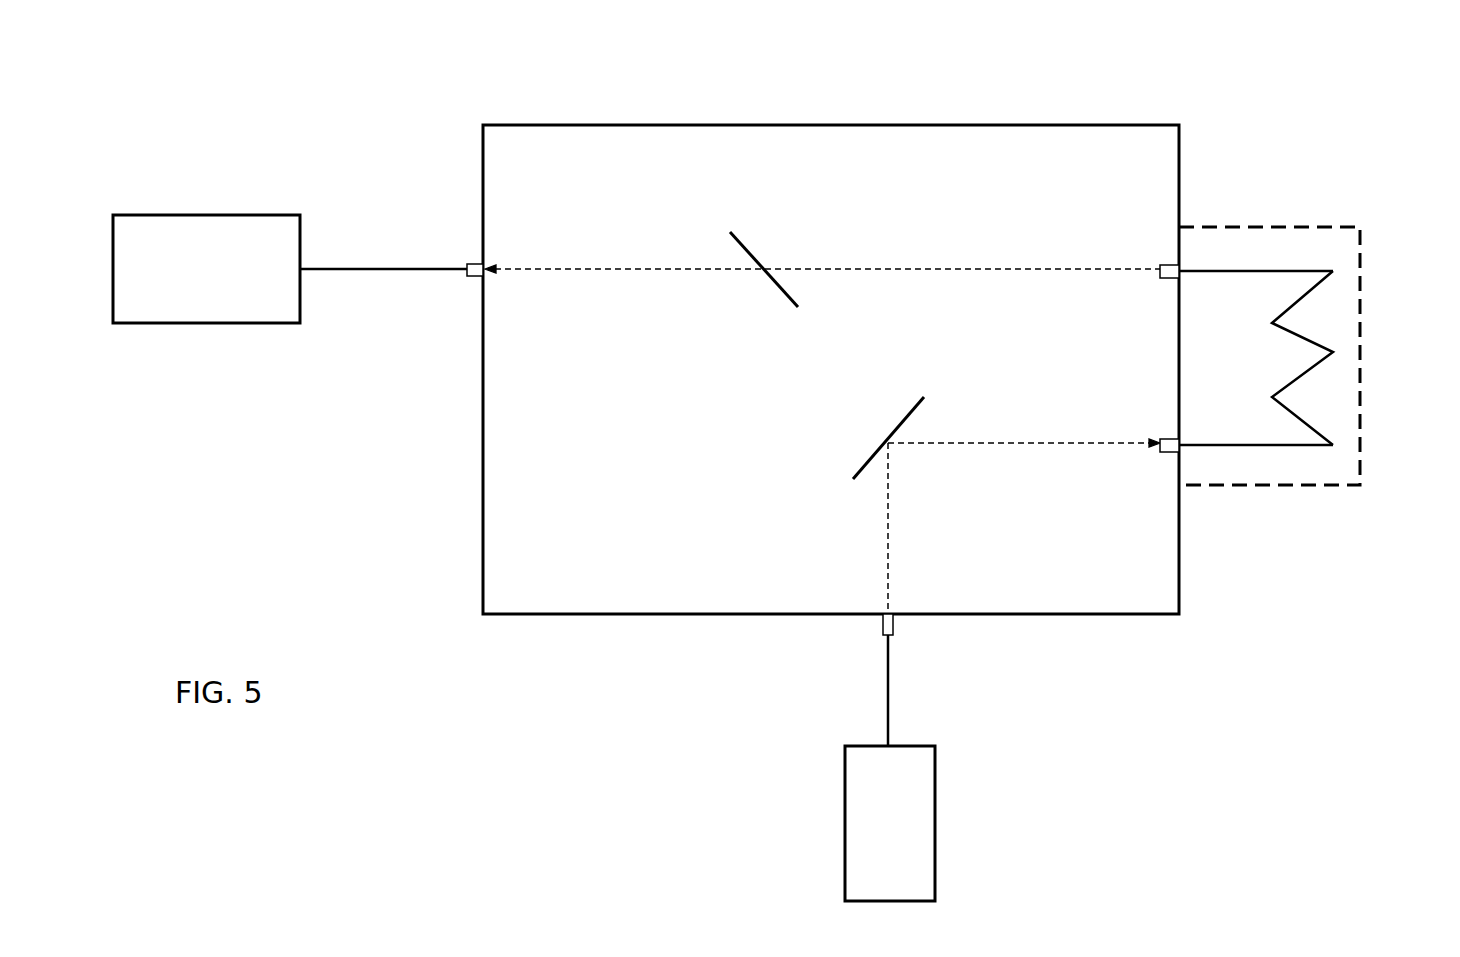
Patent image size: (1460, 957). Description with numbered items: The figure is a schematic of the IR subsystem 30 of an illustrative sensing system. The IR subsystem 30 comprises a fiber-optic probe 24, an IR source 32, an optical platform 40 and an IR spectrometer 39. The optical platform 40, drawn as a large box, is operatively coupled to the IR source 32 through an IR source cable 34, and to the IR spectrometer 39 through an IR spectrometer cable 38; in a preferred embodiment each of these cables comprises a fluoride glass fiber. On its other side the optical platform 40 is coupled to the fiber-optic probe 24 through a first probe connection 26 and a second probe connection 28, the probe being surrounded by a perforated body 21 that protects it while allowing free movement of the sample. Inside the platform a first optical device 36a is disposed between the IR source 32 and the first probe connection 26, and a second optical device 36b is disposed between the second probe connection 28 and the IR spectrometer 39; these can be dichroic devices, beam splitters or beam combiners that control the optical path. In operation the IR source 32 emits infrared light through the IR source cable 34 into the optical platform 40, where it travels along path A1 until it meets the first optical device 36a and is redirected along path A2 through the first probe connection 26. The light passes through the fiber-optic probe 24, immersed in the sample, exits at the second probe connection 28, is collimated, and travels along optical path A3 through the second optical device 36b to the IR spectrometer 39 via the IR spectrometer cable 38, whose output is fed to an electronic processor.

The perforated body 21 is at (1360, 228).
The fiber-optic probe 24 is at (1333, 352).
The first probe connection 26 is at (1166, 452).
The second probe connection 28 is at (1166, 279).
The IR subsystem 30 is at (1076, 758).
The IR source 32 is at (890, 823).
The IR source cable 34 is at (888, 678).
The first optical device 36a is at (884, 442).
The second optical device 36b is at (736, 238).
The IR spectrometer cable 38 is at (382, 268).
The IR spectrometer 39 is at (206, 269).
The optical platform 40 is at (965, 125).
The path A1 is at (888, 525).
The path A2 is at (1015, 443).
The optical path A3 is at (983, 270).